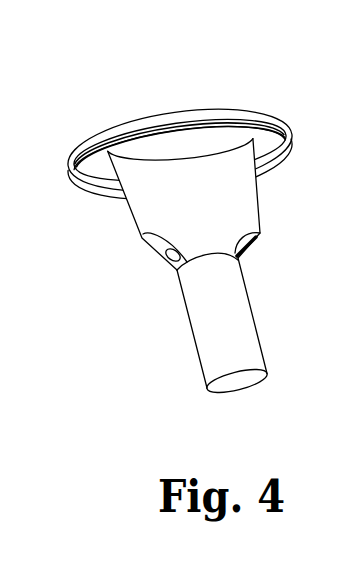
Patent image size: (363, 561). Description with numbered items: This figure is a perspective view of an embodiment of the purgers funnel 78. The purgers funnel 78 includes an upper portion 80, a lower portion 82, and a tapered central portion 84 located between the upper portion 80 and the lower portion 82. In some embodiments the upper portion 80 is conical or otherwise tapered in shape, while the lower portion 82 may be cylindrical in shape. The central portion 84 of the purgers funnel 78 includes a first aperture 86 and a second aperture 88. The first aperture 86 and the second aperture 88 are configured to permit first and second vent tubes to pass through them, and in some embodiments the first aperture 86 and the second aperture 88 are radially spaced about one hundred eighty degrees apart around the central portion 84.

The purgers funnel 78 is at (183, 218).
The upper portion 80 is at (274, 112).
The lower portion 82 is at (256, 322).
The tapered central portion 84 is at (263, 236).
The first aperture 86 is at (172, 258).
The second aperture 88 is at (250, 252).